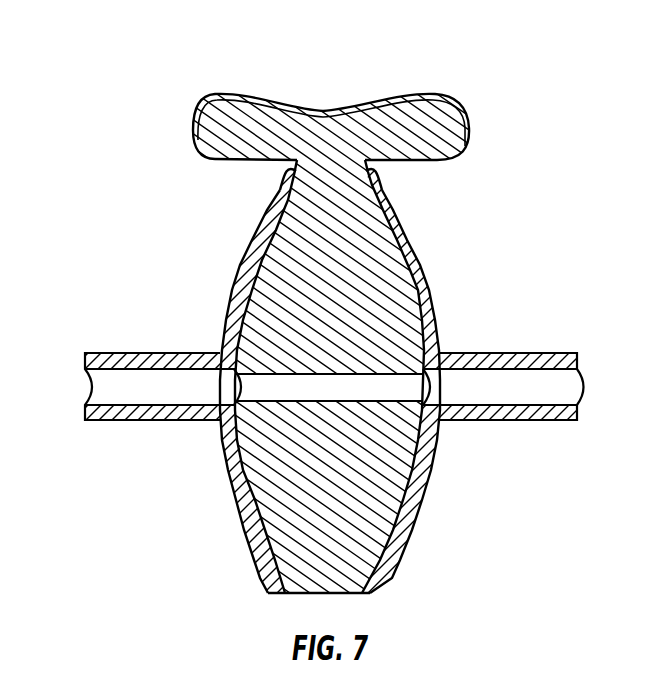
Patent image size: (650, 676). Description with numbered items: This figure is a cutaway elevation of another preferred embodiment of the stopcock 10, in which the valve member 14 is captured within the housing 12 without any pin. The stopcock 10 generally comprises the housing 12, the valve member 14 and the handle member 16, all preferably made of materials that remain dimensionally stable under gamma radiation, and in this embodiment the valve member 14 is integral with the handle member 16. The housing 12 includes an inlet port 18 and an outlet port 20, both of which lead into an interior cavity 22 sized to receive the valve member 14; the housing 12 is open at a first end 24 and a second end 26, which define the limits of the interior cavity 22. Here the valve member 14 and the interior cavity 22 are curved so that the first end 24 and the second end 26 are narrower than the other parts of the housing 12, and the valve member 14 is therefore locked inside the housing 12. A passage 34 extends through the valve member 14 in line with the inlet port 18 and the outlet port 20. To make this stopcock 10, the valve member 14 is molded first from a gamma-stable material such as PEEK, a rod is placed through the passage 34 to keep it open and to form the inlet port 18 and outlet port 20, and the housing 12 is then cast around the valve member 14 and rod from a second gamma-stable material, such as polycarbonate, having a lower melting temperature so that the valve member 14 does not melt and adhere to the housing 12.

The stopcock 10 is at (232, 50).
The housing 12 is at (355, 394).
The valve member 14 is at (386, 273).
The handle member 16 is at (447, 141).
The inlet port 18 is at (124, 422).
The outlet port 20 is at (493, 422).
The interior cavity 22 is at (282, 180).
The first end 24 is at (378, 180).
The second end 26 is at (386, 588).
The passage 34 is at (397, 390).